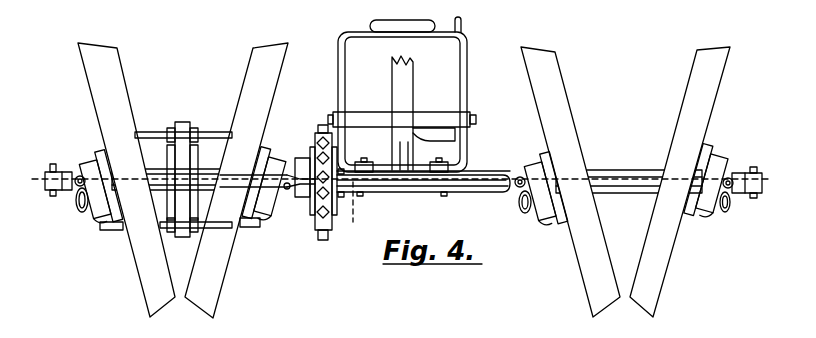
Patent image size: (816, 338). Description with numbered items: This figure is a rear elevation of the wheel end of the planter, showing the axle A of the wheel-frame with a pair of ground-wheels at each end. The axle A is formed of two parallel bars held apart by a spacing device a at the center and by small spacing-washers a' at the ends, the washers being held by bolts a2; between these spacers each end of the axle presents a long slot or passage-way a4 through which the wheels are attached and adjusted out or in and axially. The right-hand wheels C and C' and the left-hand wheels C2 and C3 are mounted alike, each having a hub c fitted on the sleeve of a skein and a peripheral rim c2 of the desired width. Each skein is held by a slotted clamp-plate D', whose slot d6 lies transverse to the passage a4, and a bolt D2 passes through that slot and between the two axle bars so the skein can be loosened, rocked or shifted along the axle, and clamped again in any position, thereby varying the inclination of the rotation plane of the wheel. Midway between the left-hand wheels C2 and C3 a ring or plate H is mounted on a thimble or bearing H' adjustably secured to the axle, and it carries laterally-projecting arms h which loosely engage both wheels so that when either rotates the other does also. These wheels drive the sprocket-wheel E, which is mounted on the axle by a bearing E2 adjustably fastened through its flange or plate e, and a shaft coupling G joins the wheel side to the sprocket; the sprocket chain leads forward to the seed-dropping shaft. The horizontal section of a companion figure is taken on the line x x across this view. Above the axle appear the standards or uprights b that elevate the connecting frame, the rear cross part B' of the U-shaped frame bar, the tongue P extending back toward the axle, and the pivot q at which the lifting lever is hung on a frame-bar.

The left-hand wheel C3 is at (126, 180).
The left-hand wheel C2 is at (236, 180).
The right-hand wheel C' is at (570, 182).
The right-hand wheel C is at (680, 182).
The peripheral rim c2 is at (399, 284).
The slot or passage-way a4 is at (166, 133).
The spacing device a is at (423, 188).
The axle A is at (481, 171).
The ring or plate H is at (195, 162).
The thimble or bearing H' is at (182, 200).
The laterally-projecting arms h is at (141, 132).
The hub c is at (112, 196).
The slot d6 is at (91, 166).
The bolt D2 is at (73, 182).
The slotted clamp-plate D' is at (392, 216).
The spacing-washer a' is at (403, 190).
The bolt a2 is at (51, 164).
The shaft coupling G is at (293, 197).
The flange or plate e is at (301, 158).
The sprocket-wheel E is at (323, 241).
The bearing E2 is at (336, 216).
The section line x is at (394, 202).
The rear cross part B' is at (402, 94).
The standards or uprights b is at (346, 142).
The pivot q is at (471, 113).
The tongue P is at (415, 78).